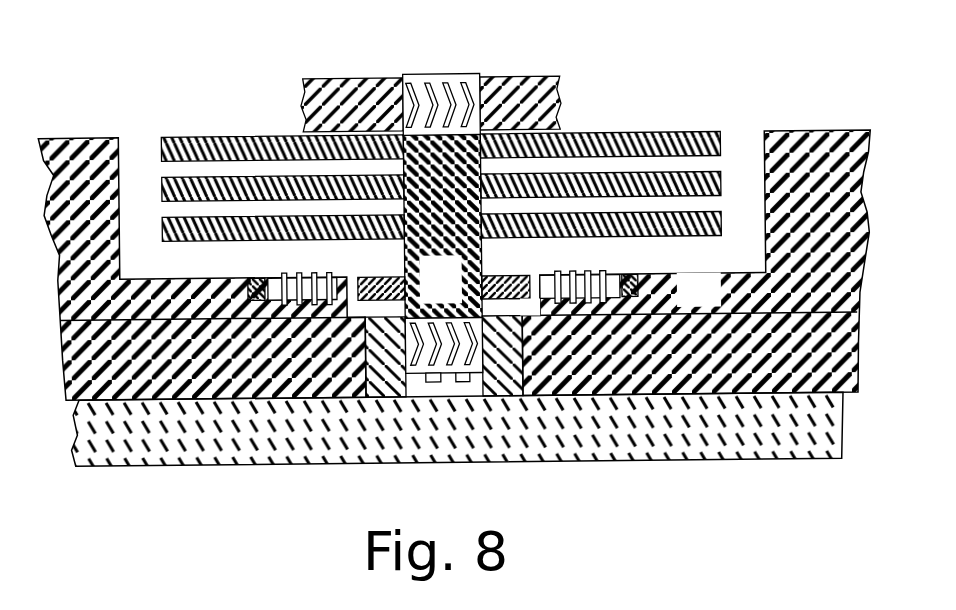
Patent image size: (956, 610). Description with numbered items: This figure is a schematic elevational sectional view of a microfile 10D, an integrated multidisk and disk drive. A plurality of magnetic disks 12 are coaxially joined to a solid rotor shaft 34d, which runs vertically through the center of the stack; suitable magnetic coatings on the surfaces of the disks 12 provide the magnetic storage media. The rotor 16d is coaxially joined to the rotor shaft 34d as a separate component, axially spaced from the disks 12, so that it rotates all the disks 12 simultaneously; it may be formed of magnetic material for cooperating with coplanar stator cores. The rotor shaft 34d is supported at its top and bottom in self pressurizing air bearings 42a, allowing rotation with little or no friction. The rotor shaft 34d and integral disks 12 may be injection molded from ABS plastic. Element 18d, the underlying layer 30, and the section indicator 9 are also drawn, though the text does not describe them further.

The microfile 10D is at (196, 97).
The magnetic disks 12 is at (708, 213).
The self pressurizing air bearings 42a is at (478, 84).
The rotor 16d is at (397, 280).
The rotor shaft 34d is at (482, 248).
The connection portion 18d is at (527, 303).
The section line for FIG. 9 is at (460, 260).
The substrate layer 30 is at (352, 440).